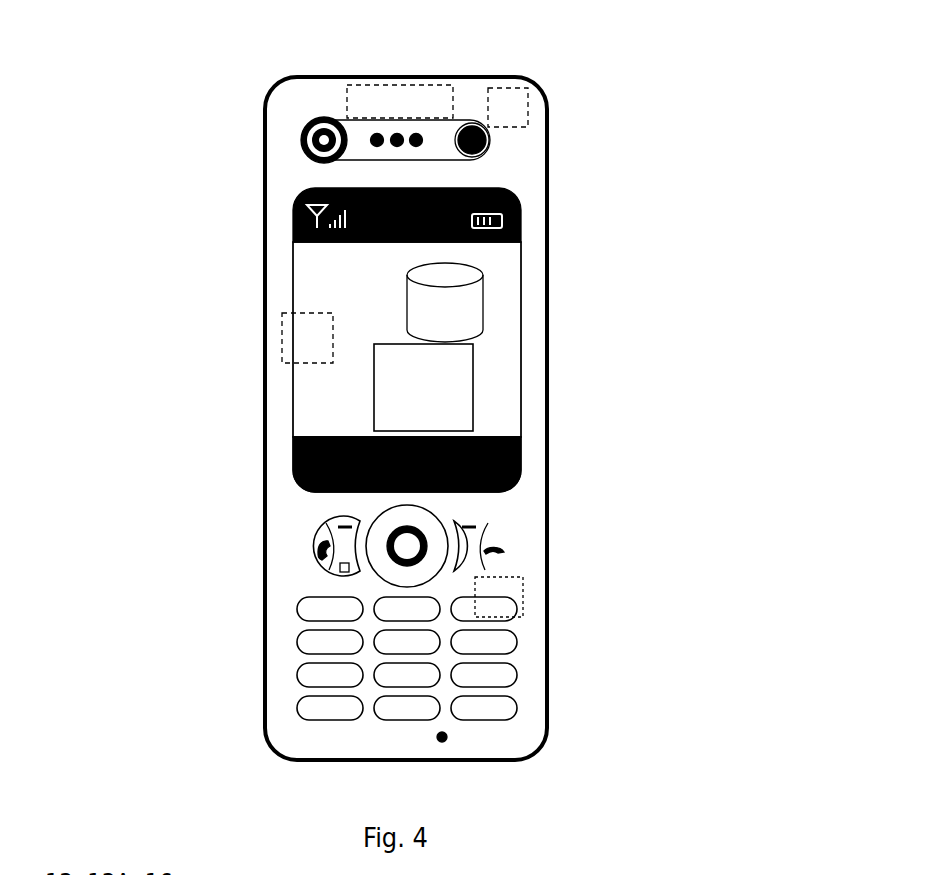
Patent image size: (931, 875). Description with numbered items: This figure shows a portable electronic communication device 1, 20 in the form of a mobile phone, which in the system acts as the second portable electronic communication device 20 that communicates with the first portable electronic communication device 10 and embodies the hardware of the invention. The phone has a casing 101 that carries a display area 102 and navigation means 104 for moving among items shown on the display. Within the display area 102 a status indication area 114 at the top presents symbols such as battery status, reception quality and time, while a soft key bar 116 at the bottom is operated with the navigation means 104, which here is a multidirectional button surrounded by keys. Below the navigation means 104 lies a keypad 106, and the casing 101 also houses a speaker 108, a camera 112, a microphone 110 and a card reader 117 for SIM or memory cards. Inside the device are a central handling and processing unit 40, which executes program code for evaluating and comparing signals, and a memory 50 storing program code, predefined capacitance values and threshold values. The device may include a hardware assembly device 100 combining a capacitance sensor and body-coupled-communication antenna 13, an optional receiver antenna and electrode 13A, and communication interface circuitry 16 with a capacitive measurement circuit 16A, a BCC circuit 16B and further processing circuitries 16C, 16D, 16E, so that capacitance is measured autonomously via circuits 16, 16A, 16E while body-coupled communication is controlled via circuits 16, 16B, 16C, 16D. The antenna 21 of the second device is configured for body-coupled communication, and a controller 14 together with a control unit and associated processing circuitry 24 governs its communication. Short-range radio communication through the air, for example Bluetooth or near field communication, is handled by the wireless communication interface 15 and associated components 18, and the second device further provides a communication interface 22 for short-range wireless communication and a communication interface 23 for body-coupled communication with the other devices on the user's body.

The portable electronic communication device 1 is at (545, 418).
The first portable electronic communication device 10 is at (545, 418).
The second portable electronic communication device 20 is at (545, 418).
The communication interface 22 is at (545, 418).
The communication interface 23 is at (545, 418).
The control unit with associated processing circuitry 24 is at (556, 133).
The combined capacitance sensor and BCC antenna 13 is at (251, 62).
The receiver BCC antenna 13A is at (251, 62).
The communication interface and circuitry 16 is at (251, 62).
The capacitive measurement circuit 16A is at (251, 62).
The BCC circuit 16B is at (251, 62).
The processing circuitry 16C is at (251, 62).
The processing circuitry 16D is at (251, 62).
The processing circuitry 16E is at (251, 62).
The antenna 21 is at (251, 62).
The hardware assembly device 100 is at (391, 68).
The controller 14 is at (512, 110).
The wireless communication interface and circuitry 15 is at (196, 336).
The short-range wireless communication components 18 is at (297, 343).
The camera 112 is at (292, 149).
The speaker 108 is at (440, 152).
The display area 102 is at (472, 340).
The status indication area 114 is at (343, 256).
The casing 101 is at (255, 417).
The soft key bar 116 is at (293, 452).
The navigation means 104 is at (446, 510).
The card reader 117 is at (510, 587).
The keypad 106 is at (313, 712).
The microphone 110 is at (442, 737).
The memory 50 is at (445, 302).
The central handling and processing unit 40 is at (423, 387).